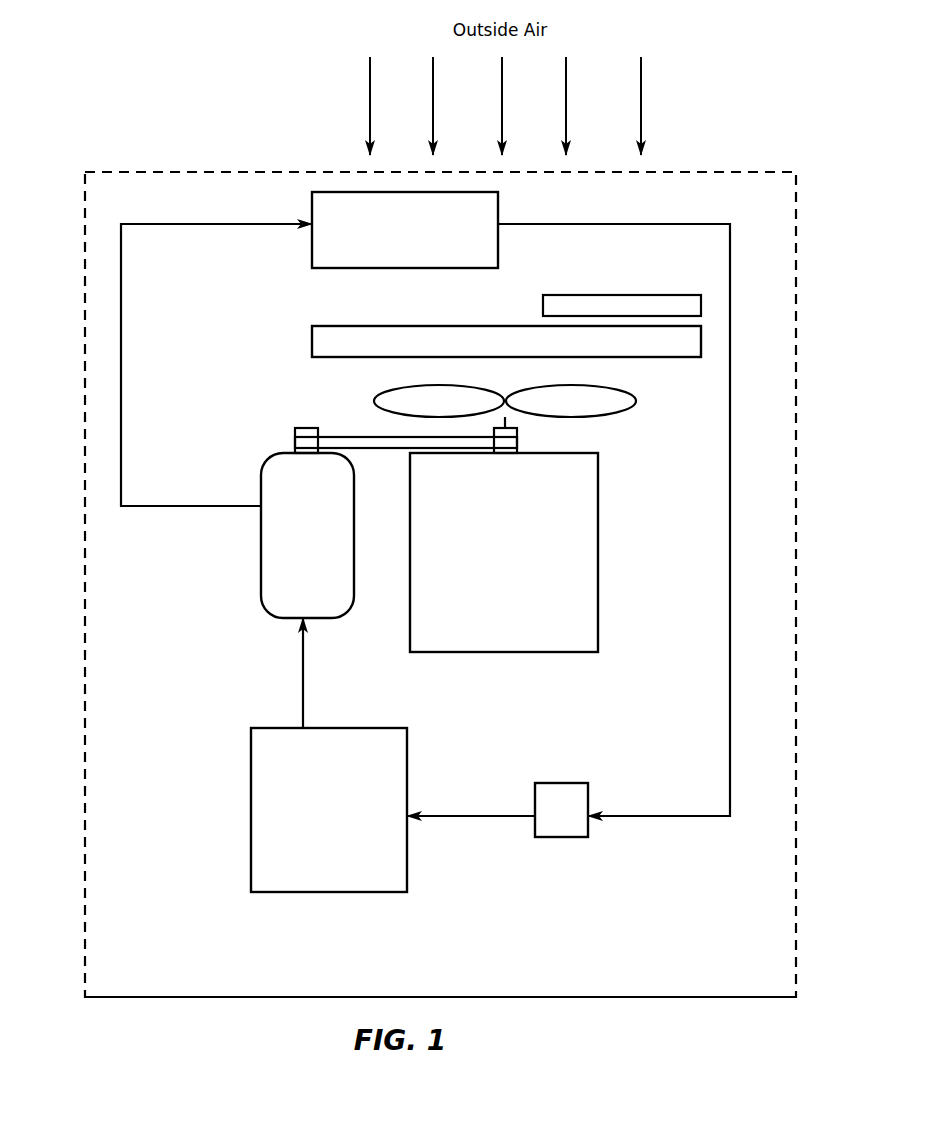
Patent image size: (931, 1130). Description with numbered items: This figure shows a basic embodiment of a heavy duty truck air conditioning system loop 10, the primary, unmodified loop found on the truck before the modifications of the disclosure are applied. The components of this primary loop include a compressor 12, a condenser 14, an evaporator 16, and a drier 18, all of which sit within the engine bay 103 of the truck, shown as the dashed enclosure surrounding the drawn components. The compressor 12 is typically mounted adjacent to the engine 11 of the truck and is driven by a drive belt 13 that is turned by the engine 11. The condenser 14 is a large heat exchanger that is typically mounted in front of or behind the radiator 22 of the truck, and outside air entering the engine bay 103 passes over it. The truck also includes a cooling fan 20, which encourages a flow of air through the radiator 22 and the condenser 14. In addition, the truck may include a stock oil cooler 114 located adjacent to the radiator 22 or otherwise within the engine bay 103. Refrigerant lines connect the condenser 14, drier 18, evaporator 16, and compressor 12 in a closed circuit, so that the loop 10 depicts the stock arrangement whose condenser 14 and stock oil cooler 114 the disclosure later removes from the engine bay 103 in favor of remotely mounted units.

The heavy duty truck air conditioning system loop 10 is at (148, 156).
The engine bay 103 is at (610, 998).
The condenser 14 is at (320, 192).
The stock oil cooler 114 is at (701, 308).
The radiator 22 is at (312, 340).
The cooling fan 20 is at (625, 412).
The drive belt 13 is at (295, 440).
The compressor 12 is at (261, 563).
The engine 11 is at (490, 566).
The evaporator 16 is at (316, 892).
The drier 18 is at (553, 837).